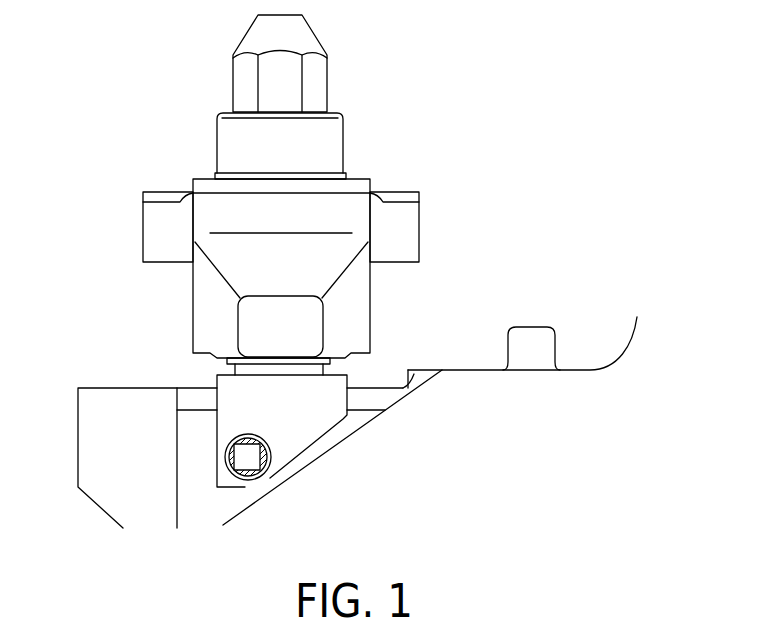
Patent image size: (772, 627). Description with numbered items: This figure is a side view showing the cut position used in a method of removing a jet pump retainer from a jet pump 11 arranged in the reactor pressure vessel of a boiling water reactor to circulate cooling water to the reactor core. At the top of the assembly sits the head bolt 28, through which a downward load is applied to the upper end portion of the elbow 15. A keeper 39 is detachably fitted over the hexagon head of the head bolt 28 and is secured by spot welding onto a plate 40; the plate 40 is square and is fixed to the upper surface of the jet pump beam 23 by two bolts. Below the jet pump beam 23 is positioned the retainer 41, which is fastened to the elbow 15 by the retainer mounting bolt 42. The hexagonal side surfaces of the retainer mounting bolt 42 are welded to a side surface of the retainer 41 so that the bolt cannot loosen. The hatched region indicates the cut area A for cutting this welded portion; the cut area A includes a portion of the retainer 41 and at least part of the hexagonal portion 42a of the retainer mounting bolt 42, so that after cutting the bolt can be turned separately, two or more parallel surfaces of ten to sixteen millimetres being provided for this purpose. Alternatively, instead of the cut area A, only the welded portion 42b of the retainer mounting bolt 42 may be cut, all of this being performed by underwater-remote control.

The jet pump 11 is at (347, 60).
The head bolt 28 is at (232, 70).
The keeper 39 is at (217, 130).
The plate 40 is at (192, 192).
The jet pump beam 23 is at (143, 225).
The elbow 15 is at (78, 428).
The retainer 41 is at (327, 422).
The retainer mounting bolt 42 is at (242, 455).
The hexagonal portion 42a is at (252, 481).
The welded portion 42b is at (268, 477).
The cut area A is at (275, 450).